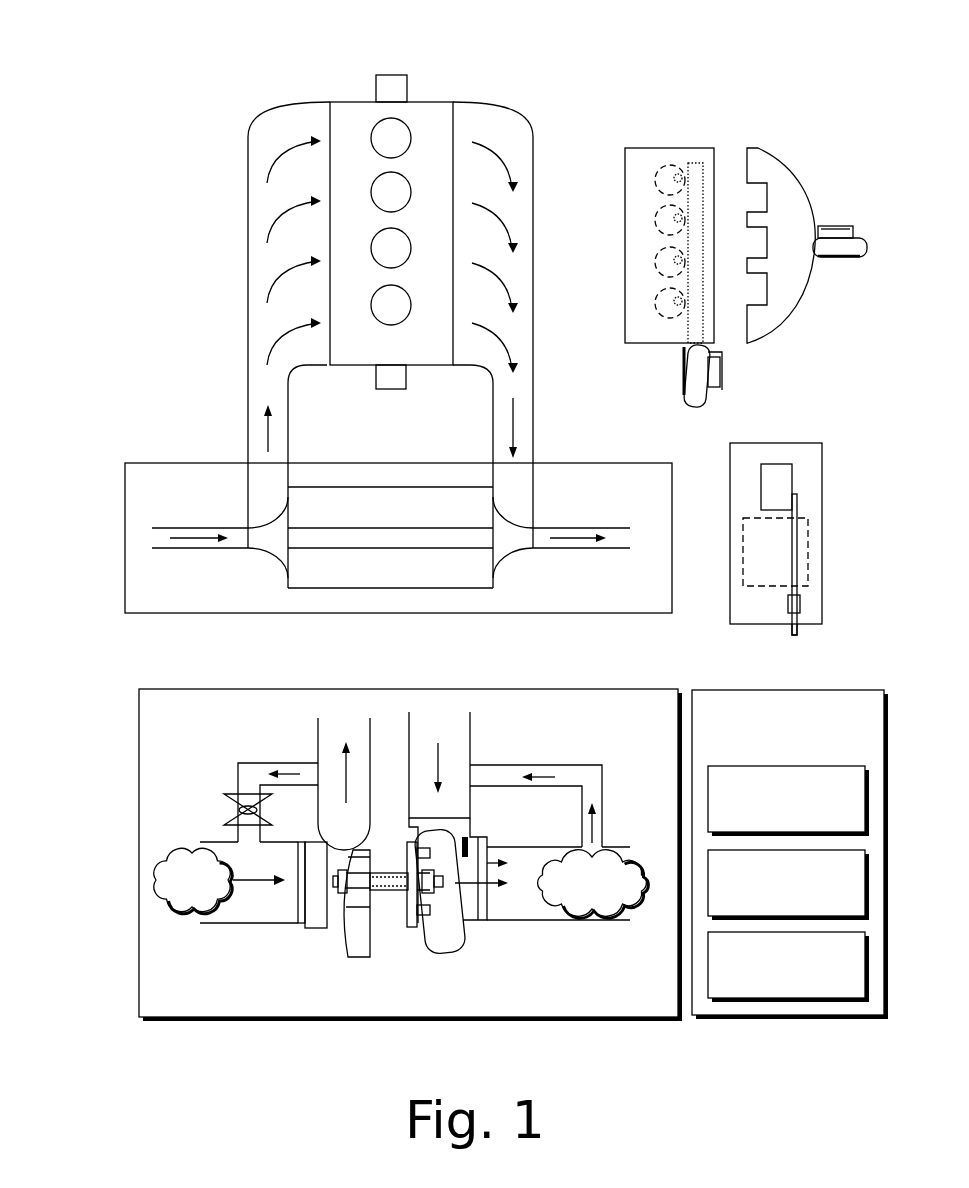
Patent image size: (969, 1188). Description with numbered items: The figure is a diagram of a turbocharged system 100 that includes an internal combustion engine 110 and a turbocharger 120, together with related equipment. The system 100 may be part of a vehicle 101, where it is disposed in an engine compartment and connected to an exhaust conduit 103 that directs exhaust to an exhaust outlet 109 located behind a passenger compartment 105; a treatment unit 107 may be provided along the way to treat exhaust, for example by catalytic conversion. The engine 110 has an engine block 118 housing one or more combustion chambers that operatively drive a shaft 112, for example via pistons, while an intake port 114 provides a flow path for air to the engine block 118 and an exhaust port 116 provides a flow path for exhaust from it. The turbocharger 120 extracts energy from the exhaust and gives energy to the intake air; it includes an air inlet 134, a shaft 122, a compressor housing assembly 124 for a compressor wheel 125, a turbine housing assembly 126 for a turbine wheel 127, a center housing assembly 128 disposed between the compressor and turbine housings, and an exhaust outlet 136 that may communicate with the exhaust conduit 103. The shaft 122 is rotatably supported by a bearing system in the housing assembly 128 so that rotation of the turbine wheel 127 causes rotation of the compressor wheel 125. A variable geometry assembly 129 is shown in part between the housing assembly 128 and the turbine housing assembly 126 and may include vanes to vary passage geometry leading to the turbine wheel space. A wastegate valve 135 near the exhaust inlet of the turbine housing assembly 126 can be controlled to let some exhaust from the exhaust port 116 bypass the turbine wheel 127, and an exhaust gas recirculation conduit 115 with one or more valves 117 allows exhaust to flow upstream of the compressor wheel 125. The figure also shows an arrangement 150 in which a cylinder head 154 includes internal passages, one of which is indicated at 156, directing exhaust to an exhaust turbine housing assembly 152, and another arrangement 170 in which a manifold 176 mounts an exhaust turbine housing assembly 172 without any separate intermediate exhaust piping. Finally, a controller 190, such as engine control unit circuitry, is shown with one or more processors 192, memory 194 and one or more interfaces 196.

The turbocharged system 100 is at (591, 270).
The vehicle 101 is at (806, 526).
The exhaust conduit 103 is at (797, 510).
The passenger compartment 105 is at (808, 540).
The treatment unit 107 is at (800, 605).
The exhaust outlet 109 is at (797, 633).
The internal combustion engine 110 is at (360, 100).
The shaft 112 is at (390, 75).
The intake port 114 is at (267, 115).
The exhaust gas recirculation conduit 115 is at (250, 763).
The exhaust port 116 is at (515, 115).
The valve 117 is at (228, 795).
The engine block 118 is at (393, 363).
The turbocharger 120 is at (583, 463).
The shaft 122 is at (392, 550).
The compressor housing assembly 124 is at (272, 556).
The compressor wheel 125 is at (360, 905).
The turbine housing assembly 126 is at (515, 555).
The turbine wheel 127 is at (432, 896).
The housing assembly 128 is at (422, 1000).
The variable geometry assembly 129 is at (416, 898).
The air inlet 134 is at (217, 525).
The wastegate valve 135 is at (470, 832).
The exhaust outlet 136 is at (583, 528).
The arrangement 150 is at (660, 258).
The exhaust turbine housing assembly 152 is at (680, 370).
The cylinder head 154 is at (625, 222).
The passage 156 is at (697, 163).
The arrangement 170 is at (820, 231).
The exhaust turbine housing assembly 172 is at (835, 258).
The manifold 176 is at (797, 303).
The controller 190 is at (803, 754).
The processor 192 is at (803, 819).
The memory 194 is at (803, 904).
The interface 196 is at (803, 986).